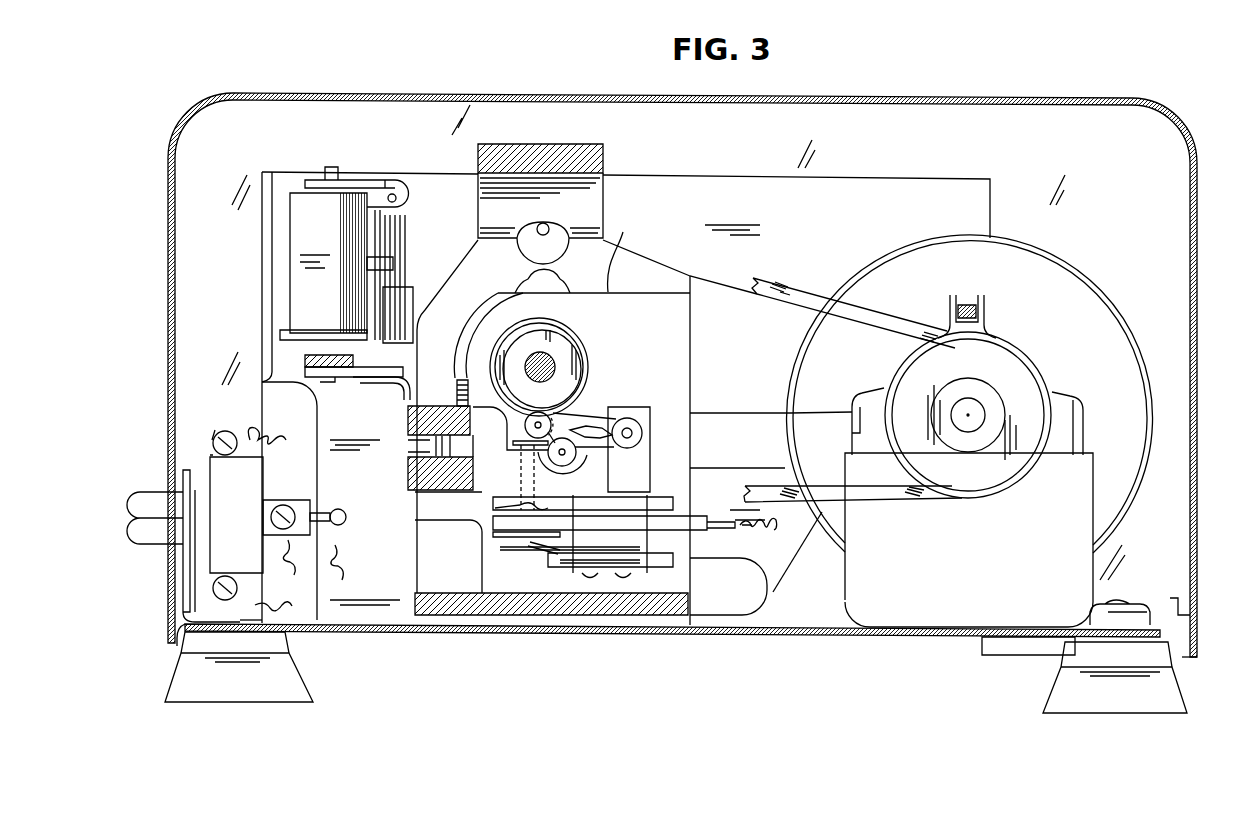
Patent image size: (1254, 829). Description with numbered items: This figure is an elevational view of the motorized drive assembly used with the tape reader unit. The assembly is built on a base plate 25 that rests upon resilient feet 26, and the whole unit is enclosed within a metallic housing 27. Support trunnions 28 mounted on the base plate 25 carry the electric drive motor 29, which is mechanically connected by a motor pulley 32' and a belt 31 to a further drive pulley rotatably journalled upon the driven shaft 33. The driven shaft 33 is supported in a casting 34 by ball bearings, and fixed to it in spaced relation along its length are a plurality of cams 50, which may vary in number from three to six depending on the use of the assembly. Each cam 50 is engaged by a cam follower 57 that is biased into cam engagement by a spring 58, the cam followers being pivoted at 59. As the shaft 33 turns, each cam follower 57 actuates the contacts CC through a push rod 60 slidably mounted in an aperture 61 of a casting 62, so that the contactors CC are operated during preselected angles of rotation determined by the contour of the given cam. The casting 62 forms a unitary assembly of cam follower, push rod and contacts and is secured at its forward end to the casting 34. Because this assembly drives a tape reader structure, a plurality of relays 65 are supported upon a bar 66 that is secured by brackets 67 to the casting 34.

The base plate 25 is at (746, 648).
The resilient feet 26 is at (300, 685).
The metallic housing 27 is at (1197, 385).
The support trunnions 28 is at (1090, 466).
The electric drive motor 29 is at (1095, 297).
The belt 31 is at (806, 288).
The motor pulley 32' is at (886, 396).
The driven shaft 33 is at (548, 362).
The casting 34 is at (697, 392).
The cams 50 is at (567, 382).
The cam follower 57 is at (586, 448).
The spring 58 is at (585, 418).
The pivot 59 is at (641, 433).
The push rod 60 is at (522, 472).
The aperture 61 is at (519, 470).
The casting 62 is at (642, 467).
The relays 65 is at (300, 230).
The bar 66 is at (305, 361).
The brackets 67 is at (376, 376).
The contactors CC is at (575, 546).